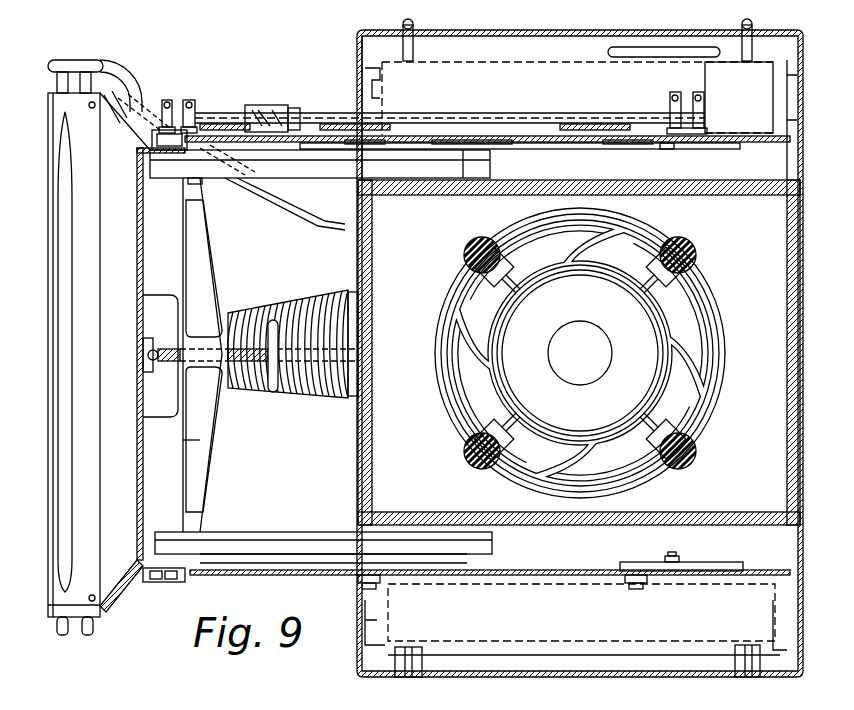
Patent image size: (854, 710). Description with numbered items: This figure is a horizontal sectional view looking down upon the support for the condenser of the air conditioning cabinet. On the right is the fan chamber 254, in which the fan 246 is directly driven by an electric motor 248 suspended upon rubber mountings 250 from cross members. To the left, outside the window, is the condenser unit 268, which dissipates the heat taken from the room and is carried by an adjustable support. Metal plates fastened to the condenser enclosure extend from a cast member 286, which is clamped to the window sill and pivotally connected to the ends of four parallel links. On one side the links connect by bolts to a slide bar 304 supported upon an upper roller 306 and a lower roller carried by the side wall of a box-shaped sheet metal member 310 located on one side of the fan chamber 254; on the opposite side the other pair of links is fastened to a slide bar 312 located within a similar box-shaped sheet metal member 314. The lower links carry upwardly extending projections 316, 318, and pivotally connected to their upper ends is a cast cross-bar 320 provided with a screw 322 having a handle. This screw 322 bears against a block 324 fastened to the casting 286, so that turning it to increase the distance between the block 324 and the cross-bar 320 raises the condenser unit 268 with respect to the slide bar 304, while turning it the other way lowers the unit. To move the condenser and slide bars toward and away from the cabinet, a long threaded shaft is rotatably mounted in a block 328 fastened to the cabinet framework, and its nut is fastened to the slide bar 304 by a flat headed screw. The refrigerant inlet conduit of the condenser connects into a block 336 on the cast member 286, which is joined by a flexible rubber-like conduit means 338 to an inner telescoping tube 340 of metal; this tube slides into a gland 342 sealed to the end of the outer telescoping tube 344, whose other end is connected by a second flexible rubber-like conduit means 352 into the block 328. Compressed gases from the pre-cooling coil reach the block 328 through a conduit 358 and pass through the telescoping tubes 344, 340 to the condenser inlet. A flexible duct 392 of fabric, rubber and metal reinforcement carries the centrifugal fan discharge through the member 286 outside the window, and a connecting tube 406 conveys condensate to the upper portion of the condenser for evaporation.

The fan 246 is at (463, 342).
The electric motor 248 is at (645, 338).
The rubber mountings 250 is at (462, 250).
The fan chamber 254 is at (428, 476).
The condenser unit 268 is at (80, 612).
The cast member 286 is at (201, 466).
The slide bar 304 is at (652, 135).
The upper roller 306 is at (575, 146).
The box-shaped sheet metal member 310 is at (722, 143).
The slide bar 312 is at (716, 566).
The box-shaped sheet metal member 314 is at (752, 564).
The upwardly extending projection 316 is at (192, 182).
The upwardly extending projection 318 is at (192, 530).
The cast cross-bar 320 is at (205, 442).
The screw 322 is at (234, 384).
The block 324 is at (148, 348).
The block 328 is at (752, 113).
The block 336 is at (150, 108).
The flexible rubber-like conduit means 338 is at (180, 100).
The inner telescoping tube 340 is at (222, 114).
The gland 342 is at (268, 104).
The outer telescoping tube 344 is at (322, 118).
The clamp 352 is at (686, 118).
The conduit 358 is at (715, 42).
The flexible duct 392 is at (305, 357).
The connecting tube 406 is at (296, 218).